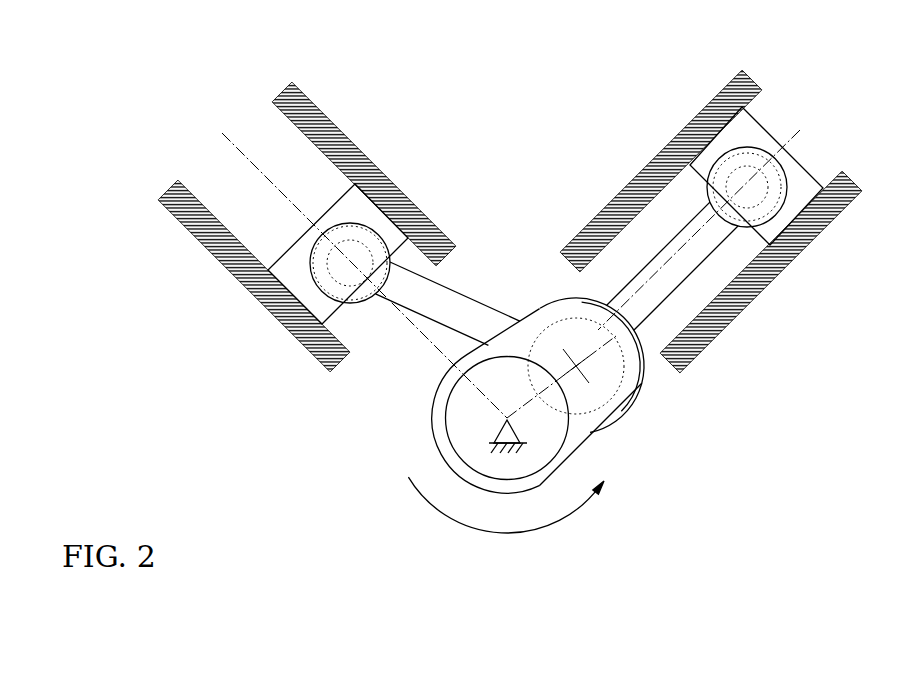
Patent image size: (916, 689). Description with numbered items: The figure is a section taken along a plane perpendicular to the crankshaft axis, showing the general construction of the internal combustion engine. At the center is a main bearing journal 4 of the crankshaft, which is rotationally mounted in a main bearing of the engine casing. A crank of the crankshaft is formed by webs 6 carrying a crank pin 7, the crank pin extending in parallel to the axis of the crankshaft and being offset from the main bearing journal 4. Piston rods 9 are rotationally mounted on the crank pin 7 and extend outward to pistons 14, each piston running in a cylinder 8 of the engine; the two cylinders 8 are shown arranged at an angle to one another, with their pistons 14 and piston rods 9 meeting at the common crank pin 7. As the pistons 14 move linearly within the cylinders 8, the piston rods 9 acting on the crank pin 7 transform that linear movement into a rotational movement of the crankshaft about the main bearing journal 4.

The main bearing journal 4 is at (468, 440).
The web 6 is at (582, 436).
The crank pin 7 is at (605, 373).
The cylinder 8 is at (683, 130).
The piston rod 9 is at (680, 266).
The piston 14 is at (793, 182).